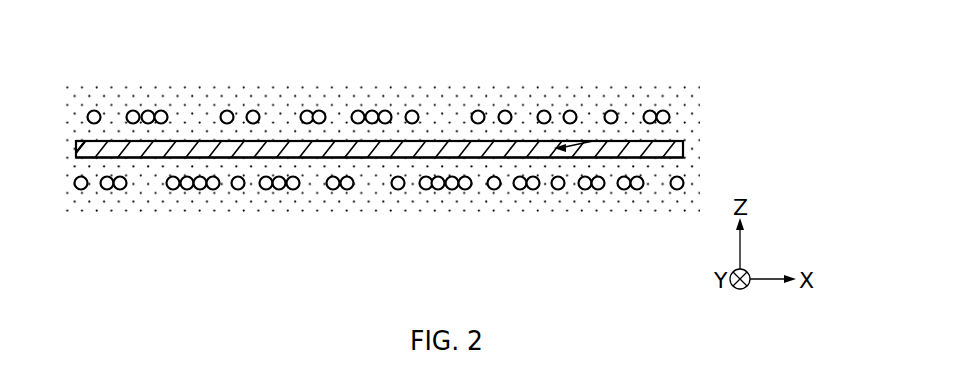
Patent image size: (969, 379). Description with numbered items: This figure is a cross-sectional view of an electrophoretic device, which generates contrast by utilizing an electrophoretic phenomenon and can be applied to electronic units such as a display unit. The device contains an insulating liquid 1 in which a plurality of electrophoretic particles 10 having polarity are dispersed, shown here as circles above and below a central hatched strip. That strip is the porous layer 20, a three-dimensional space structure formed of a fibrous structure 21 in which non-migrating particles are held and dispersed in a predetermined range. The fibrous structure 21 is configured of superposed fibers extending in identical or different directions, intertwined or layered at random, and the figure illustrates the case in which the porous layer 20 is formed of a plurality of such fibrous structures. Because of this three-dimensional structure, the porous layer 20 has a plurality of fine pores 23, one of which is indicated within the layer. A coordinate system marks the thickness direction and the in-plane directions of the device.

The insulating liquid 1 is at (220, 203).
The electrophoretic particles 10 is at (455, 190).
The porous layer 20 is at (455, 149).
The fibrous structure 21 is at (379, 149).
The fine pores 23 is at (594, 140).